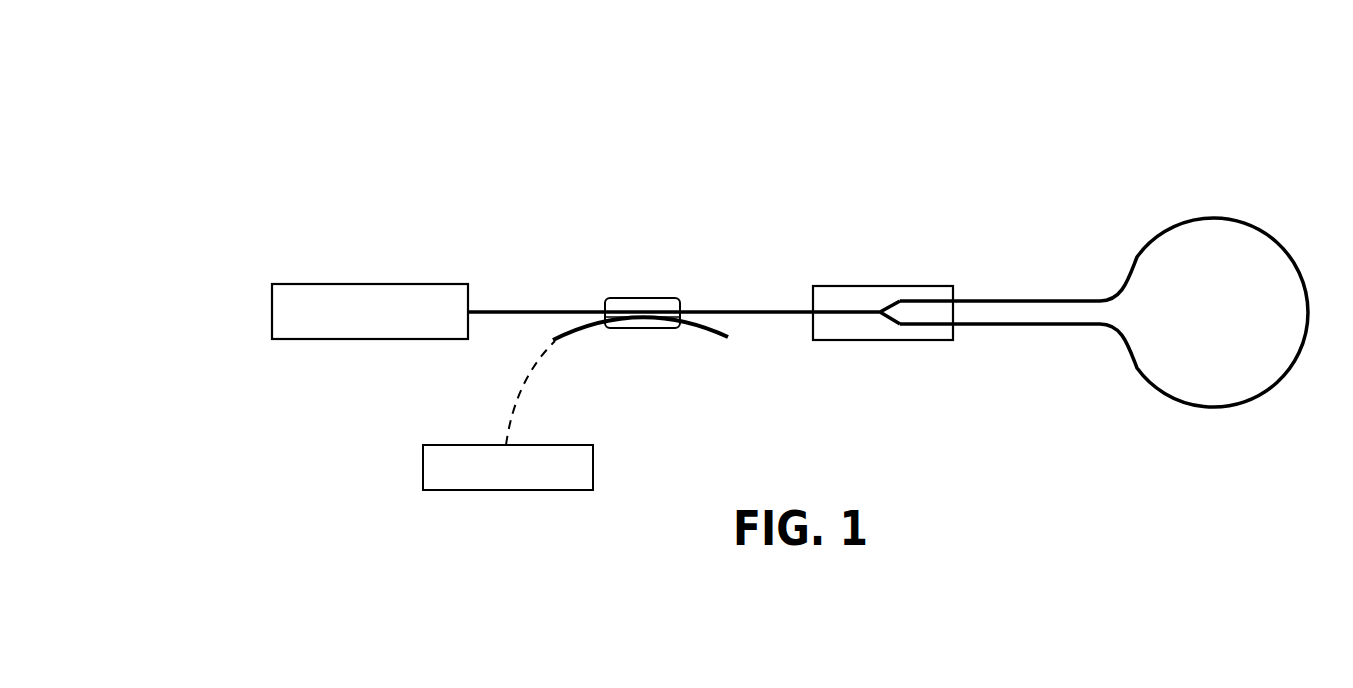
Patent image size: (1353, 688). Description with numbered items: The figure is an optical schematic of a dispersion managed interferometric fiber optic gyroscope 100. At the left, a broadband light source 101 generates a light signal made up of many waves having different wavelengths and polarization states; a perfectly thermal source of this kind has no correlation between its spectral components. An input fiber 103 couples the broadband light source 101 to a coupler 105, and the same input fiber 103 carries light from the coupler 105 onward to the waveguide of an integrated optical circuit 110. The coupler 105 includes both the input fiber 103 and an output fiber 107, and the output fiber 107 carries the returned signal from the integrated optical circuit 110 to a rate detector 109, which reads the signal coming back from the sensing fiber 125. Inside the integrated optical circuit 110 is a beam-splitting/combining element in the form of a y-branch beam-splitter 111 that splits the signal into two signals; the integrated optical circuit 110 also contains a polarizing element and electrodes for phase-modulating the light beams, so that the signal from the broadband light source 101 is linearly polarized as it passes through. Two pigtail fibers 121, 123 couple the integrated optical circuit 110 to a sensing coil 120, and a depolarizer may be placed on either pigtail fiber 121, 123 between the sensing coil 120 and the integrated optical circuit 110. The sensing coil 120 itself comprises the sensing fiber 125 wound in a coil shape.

The fiber optic gyroscope 100 is at (313, 100).
The broadband light source 101 is at (345, 284).
The input fiber 103 is at (558, 306).
The coupler 105 is at (615, 298).
The output fiber 107 is at (592, 338).
The rate detector 109 is at (512, 490).
The integrated optical circuit 110 is at (883, 296).
The y-branch beam-splitter 111 is at (902, 340).
The sensing coil 120 is at (1204, 279).
The pigtail fiber 121 is at (1072, 299).
The pigtail fiber 123 is at (1072, 326).
The sensing fiber 125 is at (1204, 216).